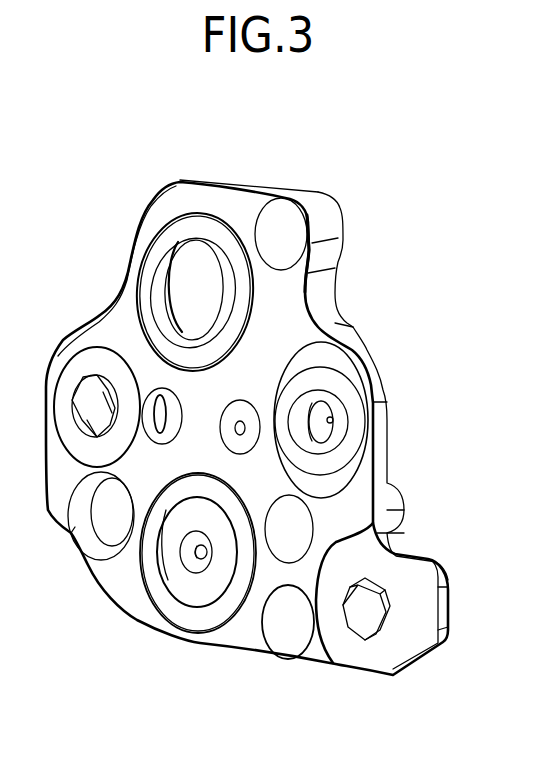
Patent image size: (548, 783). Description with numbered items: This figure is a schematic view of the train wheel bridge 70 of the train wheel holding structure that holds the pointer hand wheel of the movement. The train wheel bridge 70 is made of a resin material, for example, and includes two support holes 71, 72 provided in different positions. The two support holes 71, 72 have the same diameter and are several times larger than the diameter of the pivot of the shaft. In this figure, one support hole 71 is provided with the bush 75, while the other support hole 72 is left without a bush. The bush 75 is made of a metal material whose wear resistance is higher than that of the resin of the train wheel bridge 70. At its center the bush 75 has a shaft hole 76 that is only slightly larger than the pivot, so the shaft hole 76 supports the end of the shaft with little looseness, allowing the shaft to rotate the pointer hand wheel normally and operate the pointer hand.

The train wheel bridge 70 is at (280, 335).
The support hole 71 is at (163, 618).
The support hole 72 is at (200, 287).
The bush 75 is at (196, 630).
The shaft hole 76 is at (193, 565).